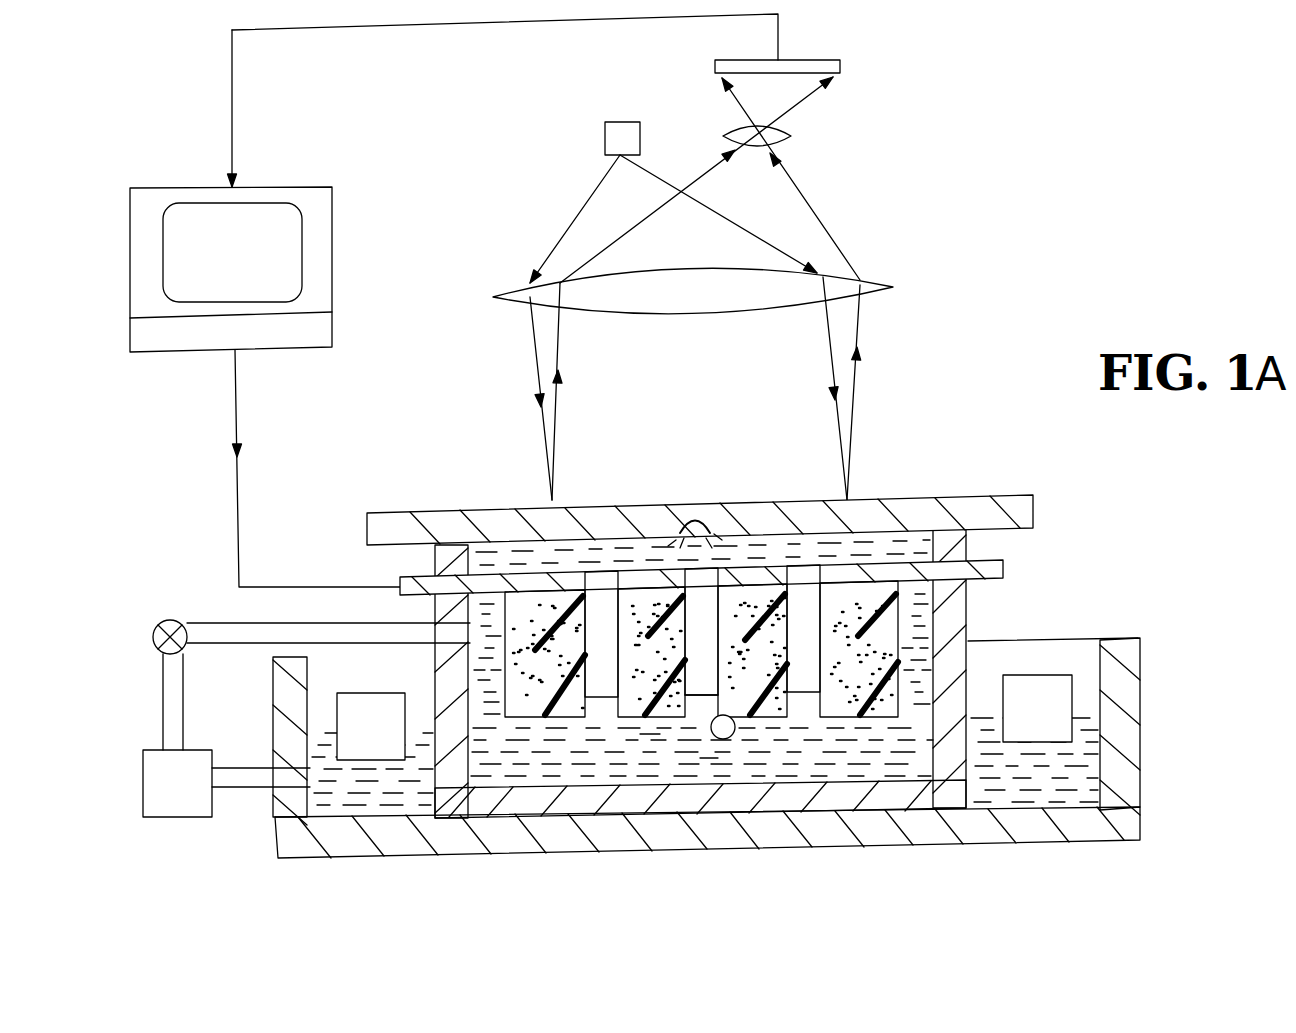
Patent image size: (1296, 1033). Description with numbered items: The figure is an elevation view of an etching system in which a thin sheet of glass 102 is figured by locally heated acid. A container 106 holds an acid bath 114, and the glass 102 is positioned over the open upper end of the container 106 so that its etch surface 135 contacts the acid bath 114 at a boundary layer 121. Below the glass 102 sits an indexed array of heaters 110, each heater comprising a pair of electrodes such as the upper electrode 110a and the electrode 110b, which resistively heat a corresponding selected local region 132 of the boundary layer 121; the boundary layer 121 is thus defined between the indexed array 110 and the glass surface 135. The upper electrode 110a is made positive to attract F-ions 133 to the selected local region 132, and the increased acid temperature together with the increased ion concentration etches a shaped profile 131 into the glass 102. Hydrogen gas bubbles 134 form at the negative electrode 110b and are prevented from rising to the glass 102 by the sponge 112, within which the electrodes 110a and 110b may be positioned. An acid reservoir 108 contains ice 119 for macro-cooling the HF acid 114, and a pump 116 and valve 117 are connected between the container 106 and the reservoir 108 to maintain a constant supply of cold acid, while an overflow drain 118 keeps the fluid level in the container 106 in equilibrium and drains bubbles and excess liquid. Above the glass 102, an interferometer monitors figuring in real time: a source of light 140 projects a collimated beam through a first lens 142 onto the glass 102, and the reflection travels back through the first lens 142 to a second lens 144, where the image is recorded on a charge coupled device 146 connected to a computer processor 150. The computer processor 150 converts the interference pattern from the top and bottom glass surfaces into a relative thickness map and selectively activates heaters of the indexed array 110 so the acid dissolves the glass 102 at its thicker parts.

The glass 102 is at (365, 530).
The container 106 is at (968, 615).
The acid reservoir 108 is at (1140, 702).
The indexed array of heaters 110 is at (400, 585).
The upper electrode 110a is at (705, 580).
The electrode 110b is at (700, 698).
The sponge 112 is at (582, 760).
The acid bath 114 is at (673, 760).
The pump 116 is at (191, 801).
The valve 117 is at (172, 619).
The overflow drain 118 is at (967, 538).
The ice 119 is at (388, 741).
The boundary layer 121 is at (880, 547).
The shaped profile 131 is at (700, 515).
The selected local region 132 is at (660, 520).
The F-ions 133 is at (728, 612).
The hydrogen gas bubbles 134 is at (731, 737).
The etch surface 135 is at (514, 545).
The source of light 140 is at (576, 138).
The first lens 142 is at (681, 313).
The second lens 144 is at (793, 130).
The charge coupled device 146 is at (842, 66).
The computer processor 150 is at (250, 255).